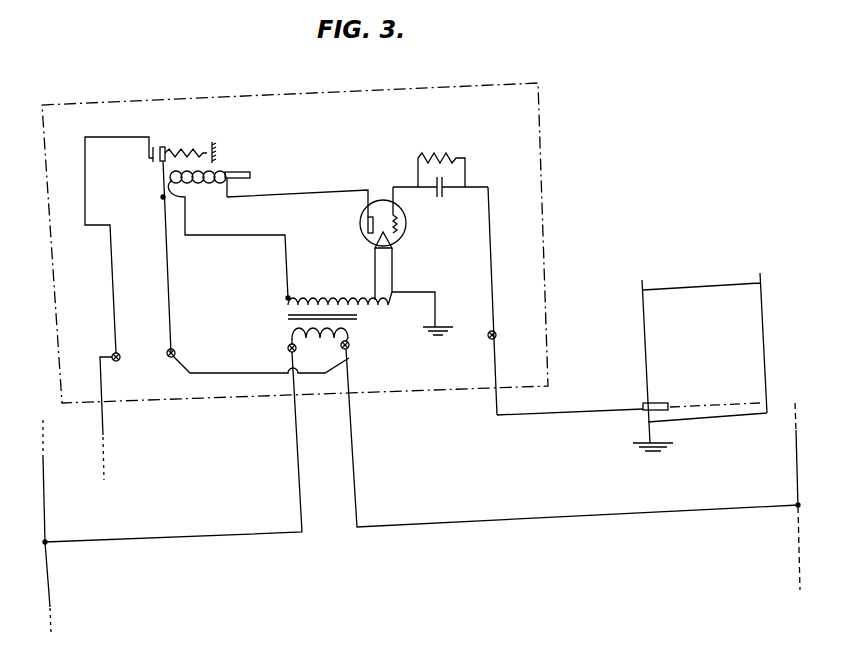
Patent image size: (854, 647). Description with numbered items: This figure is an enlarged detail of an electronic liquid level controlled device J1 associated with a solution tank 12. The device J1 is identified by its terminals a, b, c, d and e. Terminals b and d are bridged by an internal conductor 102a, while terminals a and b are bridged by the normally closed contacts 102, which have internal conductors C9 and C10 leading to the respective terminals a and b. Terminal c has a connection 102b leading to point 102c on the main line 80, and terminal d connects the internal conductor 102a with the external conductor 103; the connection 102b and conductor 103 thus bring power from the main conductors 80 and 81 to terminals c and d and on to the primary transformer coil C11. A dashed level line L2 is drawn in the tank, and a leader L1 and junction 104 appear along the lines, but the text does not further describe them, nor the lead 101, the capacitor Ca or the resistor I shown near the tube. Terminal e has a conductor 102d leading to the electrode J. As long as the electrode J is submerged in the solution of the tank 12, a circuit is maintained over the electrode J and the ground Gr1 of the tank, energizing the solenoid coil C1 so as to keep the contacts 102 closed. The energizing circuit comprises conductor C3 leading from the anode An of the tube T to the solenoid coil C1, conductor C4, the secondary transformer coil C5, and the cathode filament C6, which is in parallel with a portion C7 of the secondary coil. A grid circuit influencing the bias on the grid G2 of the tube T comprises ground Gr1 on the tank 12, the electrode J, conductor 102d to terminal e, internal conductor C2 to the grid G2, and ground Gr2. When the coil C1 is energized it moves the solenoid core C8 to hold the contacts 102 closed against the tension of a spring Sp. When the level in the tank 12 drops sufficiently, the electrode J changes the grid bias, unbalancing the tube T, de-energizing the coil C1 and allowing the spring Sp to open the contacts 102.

The electronic liquid level controlled device J1 is at (548, 222).
The internal conductor C9 is at (112, 273).
The terminal a is at (120, 357).
The lead 101 is at (102, 410).
The normally closed contacts 102 is at (155, 147).
The internal conductor C10 is at (168, 270).
The spring Sp is at (190, 150).
The solenoid coil C1 is at (222, 170).
The solenoid core C8 is at (246, 174).
The conductor C3 is at (288, 196).
The conductor C4 is at (250, 236).
The tube T is at (361, 212).
The anode An is at (367, 226).
The grid G2 is at (398, 224).
The cathode filament C6 is at (388, 247).
The portion of secondary transformer coil C7 is at (393, 292).
The ground Gr2 is at (428, 327).
The capacitor Ca is at (431, 197).
The variable resistor I is at (430, 152).
The internal conductor C2 is at (492, 284).
The terminal e is at (496, 335).
The secondary transformer coil C5 is at (333, 297).
The primary transformer coil C11 is at (328, 370).
The terminal c is at (285, 346).
The terminal d is at (349, 344).
The terminal b is at (176, 350).
The internal conductor 102a is at (215, 373).
The connection 102b is at (165, 540).
The external conductor 103 is at (455, 527).
The point 102c is at (50, 546).
The main line 80 is at (50, 583).
The conductor 102d is at (518, 418).
The tank L1 is at (666, 288).
The tank 12 is at (697, 339).
The liquid level L2 is at (690, 407).
The electrode J is at (655, 403).
The ground Gr1 is at (660, 440).
The junction 104 is at (797, 506).
The main conductor 81 is at (798, 545).